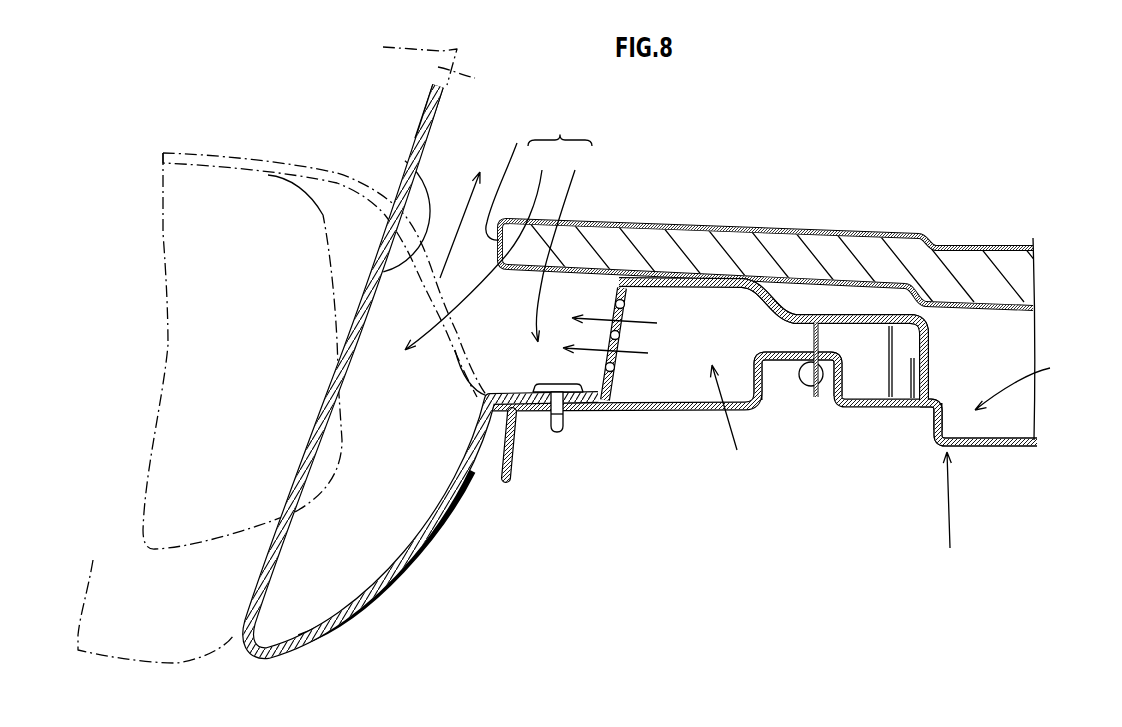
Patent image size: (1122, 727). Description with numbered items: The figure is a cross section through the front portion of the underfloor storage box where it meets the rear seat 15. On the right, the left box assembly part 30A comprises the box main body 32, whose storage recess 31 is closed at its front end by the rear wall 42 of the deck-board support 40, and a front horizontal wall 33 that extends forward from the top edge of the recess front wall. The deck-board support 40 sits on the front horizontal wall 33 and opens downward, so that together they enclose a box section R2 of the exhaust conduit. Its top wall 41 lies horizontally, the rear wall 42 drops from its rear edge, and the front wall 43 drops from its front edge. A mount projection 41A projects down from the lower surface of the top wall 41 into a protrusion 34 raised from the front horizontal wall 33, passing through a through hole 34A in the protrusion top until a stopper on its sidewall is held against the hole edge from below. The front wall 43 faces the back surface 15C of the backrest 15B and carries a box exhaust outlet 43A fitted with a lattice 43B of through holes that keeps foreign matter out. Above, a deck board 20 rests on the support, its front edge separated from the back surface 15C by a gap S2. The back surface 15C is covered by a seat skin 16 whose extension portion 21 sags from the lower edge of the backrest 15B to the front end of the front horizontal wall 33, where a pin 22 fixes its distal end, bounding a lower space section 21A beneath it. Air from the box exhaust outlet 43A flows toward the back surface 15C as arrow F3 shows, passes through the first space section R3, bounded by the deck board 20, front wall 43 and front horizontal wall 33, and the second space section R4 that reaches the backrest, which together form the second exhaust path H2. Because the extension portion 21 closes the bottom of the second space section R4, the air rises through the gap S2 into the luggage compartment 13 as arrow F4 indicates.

The luggage compartment 13 is at (784, 220).
The rear seat 15 is at (432, 41).
The backrest 15B is at (475, 78).
The back surface 15C is at (404, 161).
The seat skin 16 is at (430, 136).
The deck board 20 is at (983, 267).
The extension portion 21 is at (419, 561).
The lower space section 21A is at (447, 497).
The pin 22 is at (560, 433).
The left box assembly part 30A is at (950, 488).
The storage recess 31 is at (1023, 339).
The box main body 32 is at (1017, 449).
The front horizontal wall 33 is at (707, 411).
The protrusion 34 is at (773, 369).
The through hole 34A is at (799, 376).
The deck-board support 40 is at (780, 287).
The top wall 41 is at (708, 277).
The mount projection 41A is at (818, 399).
The rear wall 42 is at (930, 340).
The front wall 43 is at (641, 336).
The box exhaust outlet 43A is at (612, 278).
The lattice 43B is at (620, 336).
The gap S2 is at (508, 182).
The second exhaust path H2 is at (560, 130).
The second space section R4 is at (480, 249).
The first space section R3 is at (562, 245).
The box section R2 is at (732, 419).
The arrow F3 is at (607, 321).
The arrow F4 is at (459, 223).